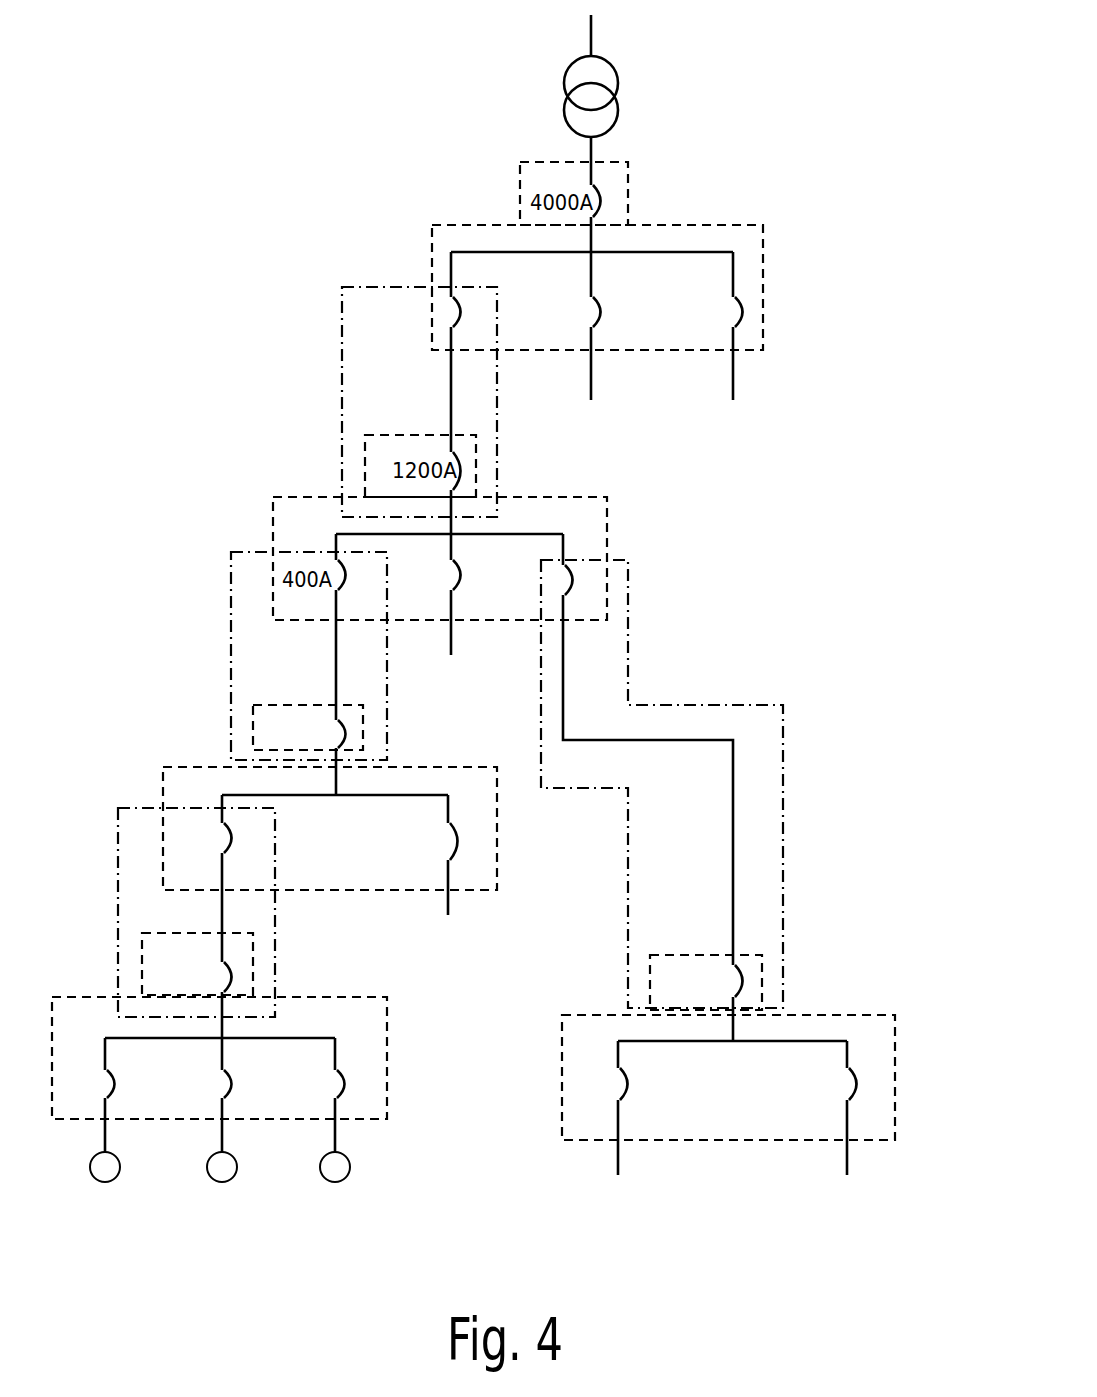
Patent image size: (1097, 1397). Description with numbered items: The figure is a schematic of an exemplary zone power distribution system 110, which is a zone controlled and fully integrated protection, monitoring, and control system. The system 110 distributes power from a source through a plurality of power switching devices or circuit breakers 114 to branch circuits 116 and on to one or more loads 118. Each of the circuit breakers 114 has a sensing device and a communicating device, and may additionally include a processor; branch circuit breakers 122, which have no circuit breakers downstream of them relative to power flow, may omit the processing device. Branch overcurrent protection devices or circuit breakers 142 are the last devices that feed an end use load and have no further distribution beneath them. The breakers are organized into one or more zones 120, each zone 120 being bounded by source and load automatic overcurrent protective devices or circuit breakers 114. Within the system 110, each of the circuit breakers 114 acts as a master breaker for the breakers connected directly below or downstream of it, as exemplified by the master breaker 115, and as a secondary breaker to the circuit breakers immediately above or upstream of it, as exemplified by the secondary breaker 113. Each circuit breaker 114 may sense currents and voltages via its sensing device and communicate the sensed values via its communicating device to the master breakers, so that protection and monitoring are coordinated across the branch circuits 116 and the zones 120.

The zone power distribution system 110 is at (745, 82).
The secondary breaker 113 is at (236, 970).
The circuit breakers 114 is at (350, 1085).
The master breaker 115 is at (234, 838).
The branch circuits 116 is at (157, 662).
The loads 118 is at (118, 1170).
The zones 120 is at (763, 262).
The branch circuit breakers 122 is at (112, 1075).
The branch overcurrent protection devices 142 is at (236, 1085).